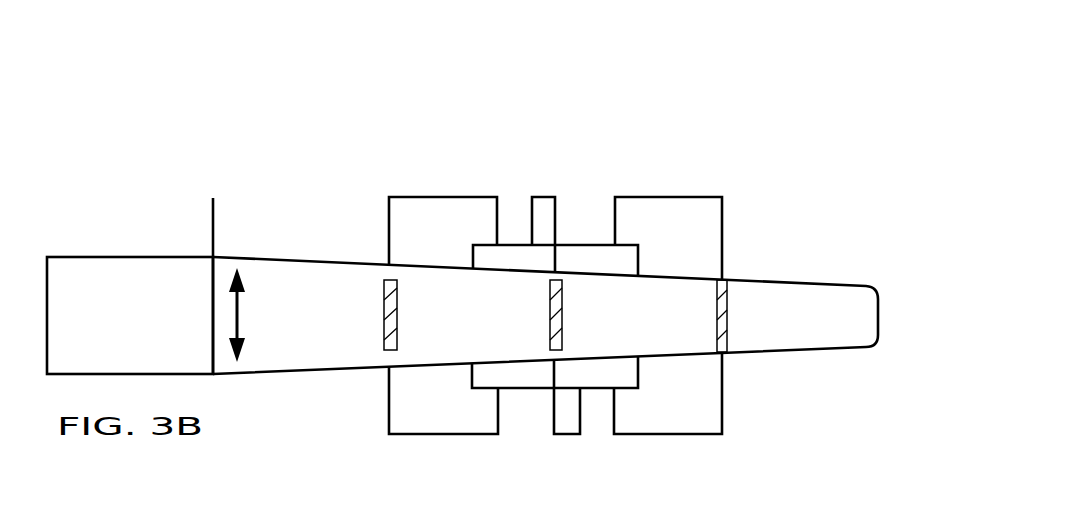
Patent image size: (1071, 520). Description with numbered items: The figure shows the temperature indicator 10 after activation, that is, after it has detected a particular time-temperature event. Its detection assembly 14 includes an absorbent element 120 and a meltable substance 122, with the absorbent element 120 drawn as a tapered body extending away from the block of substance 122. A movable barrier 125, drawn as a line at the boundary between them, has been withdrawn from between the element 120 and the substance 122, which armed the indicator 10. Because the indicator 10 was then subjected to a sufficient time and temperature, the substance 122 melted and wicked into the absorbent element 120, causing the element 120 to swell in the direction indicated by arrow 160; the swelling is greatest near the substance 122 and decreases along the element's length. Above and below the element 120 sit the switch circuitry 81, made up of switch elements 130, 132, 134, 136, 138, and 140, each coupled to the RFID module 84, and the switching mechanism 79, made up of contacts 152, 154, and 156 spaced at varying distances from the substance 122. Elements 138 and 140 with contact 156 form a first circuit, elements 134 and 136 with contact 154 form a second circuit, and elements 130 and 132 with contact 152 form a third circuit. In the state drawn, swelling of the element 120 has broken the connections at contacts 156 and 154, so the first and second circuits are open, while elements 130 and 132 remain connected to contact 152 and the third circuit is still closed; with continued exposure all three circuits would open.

The indicator 10 is at (642, 100).
The detection assembly 14 is at (345, 424).
The switching mechanism 79 is at (736, 303).
The switch circuitry 81 is at (758, 158).
The RFID module 84 is at (622, 243).
The absorbent element 120 is at (320, 258).
The meltable substance 122 is at (130, 256).
The movable barrier 125 is at (214, 226).
The switch element 130 is at (667, 197).
The switch element 132 is at (667, 434).
The switch element 134 is at (542, 197).
The switch element 136 is at (565, 434).
The switch element 138 is at (440, 197).
The switch element 140 is at (440, 434).
The contact 152 is at (728, 340).
The contact 154 is at (558, 312).
The contact 156 is at (384, 344).
The arrow 160 is at (233, 314).